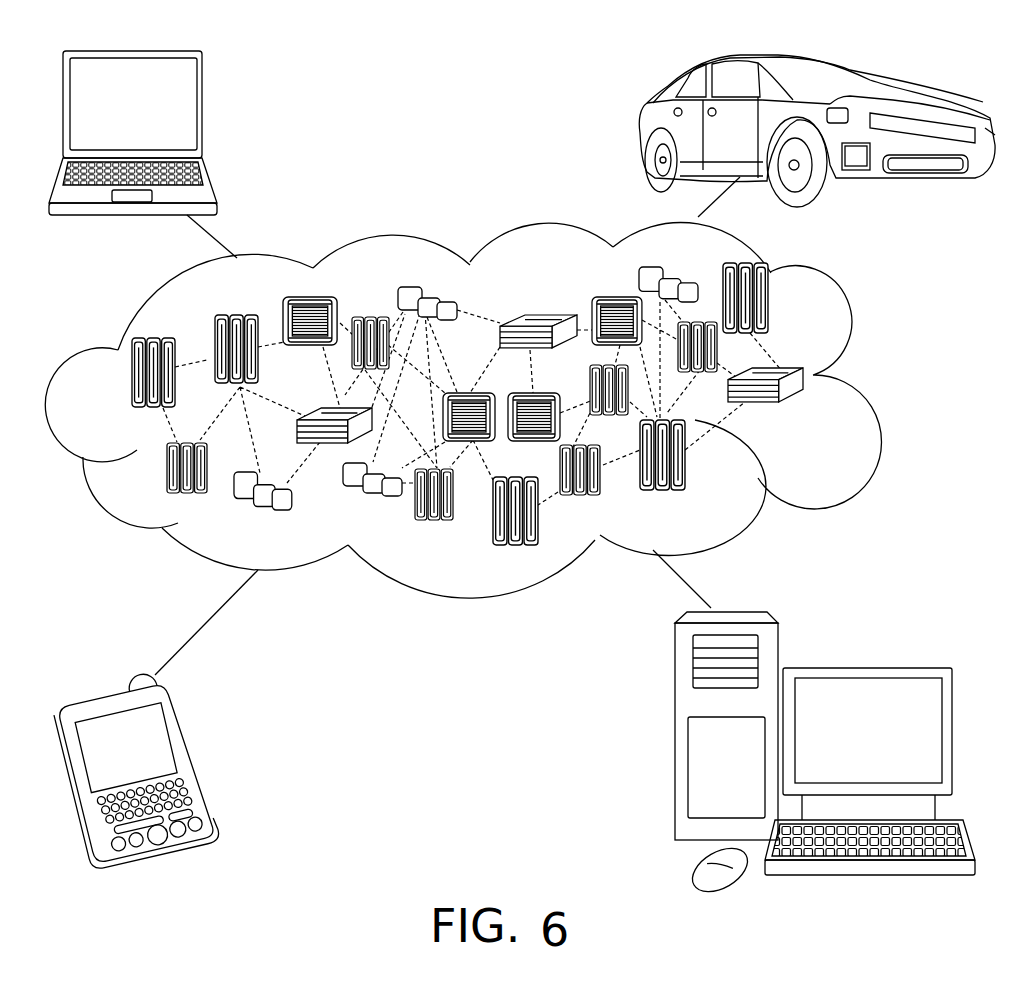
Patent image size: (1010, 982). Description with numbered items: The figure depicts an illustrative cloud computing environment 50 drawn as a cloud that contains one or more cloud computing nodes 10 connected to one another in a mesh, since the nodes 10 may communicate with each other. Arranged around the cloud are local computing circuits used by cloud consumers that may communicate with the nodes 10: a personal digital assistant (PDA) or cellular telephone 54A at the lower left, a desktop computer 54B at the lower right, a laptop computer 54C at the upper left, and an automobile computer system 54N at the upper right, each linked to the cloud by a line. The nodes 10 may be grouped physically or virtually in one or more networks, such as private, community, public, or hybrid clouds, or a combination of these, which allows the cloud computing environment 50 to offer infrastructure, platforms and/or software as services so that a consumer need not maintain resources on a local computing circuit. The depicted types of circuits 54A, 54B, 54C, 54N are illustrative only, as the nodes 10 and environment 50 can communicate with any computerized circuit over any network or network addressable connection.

The cloud computing node 10 is at (810, 413).
The cloud computing environment 50 is at (868, 385).
The personal digital assistant (PDA) or cellular telephone 54A is at (190, 760).
The desktop computer 54B is at (863, 667).
The laptop computer 54C is at (203, 113).
The automobile computer system 54N is at (643, 128).